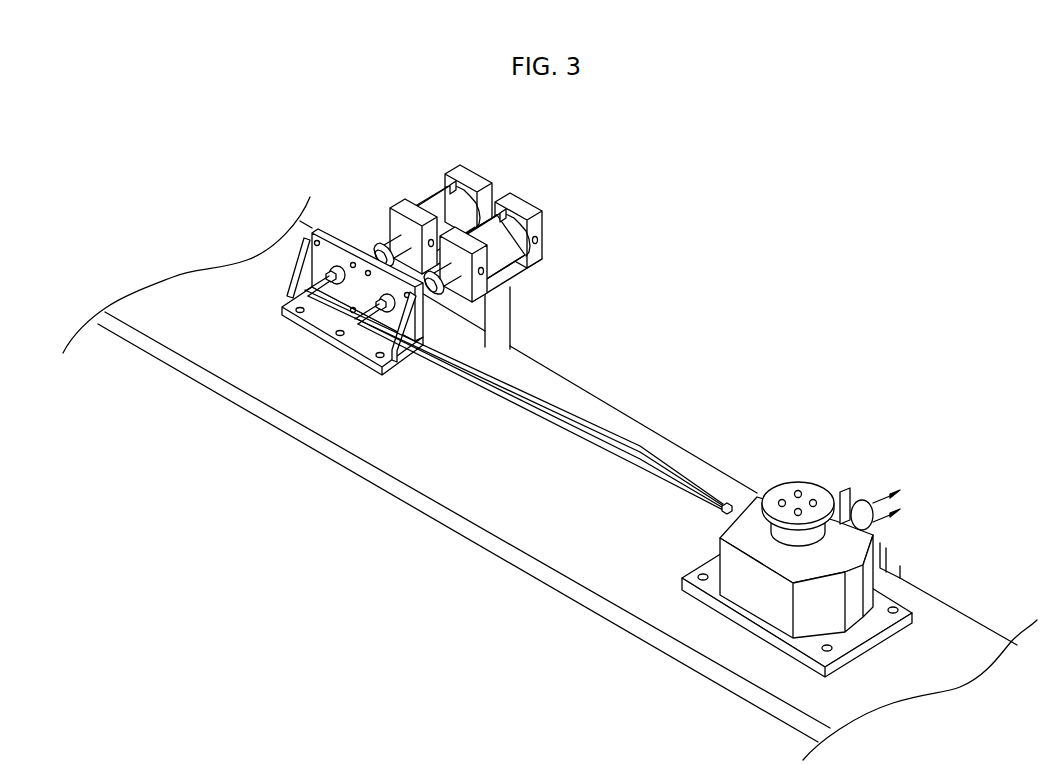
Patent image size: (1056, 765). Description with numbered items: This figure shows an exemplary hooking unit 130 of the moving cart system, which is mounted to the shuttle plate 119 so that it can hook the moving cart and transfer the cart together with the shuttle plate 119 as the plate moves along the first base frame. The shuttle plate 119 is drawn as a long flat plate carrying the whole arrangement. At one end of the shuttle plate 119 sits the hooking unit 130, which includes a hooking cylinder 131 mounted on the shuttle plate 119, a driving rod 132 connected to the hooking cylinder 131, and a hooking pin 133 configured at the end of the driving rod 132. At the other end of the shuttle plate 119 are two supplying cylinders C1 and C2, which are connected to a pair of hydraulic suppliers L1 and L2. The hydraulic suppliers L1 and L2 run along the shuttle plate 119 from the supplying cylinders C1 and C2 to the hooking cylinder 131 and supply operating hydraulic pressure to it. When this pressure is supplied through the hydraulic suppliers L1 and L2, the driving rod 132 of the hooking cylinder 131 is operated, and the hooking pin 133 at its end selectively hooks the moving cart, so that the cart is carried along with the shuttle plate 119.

The shuttle plate 119 is at (432, 488).
The hooking unit 130 is at (819, 558).
The hooking cylinder 131 is at (853, 590).
The driving rod 132 is at (787, 545).
The hooking pin 133 is at (796, 482).
The supplying cylinder C1 is at (522, 207).
The supplying cylinder C2 is at (468, 175).
The hydraulic supplier L1 is at (587, 422).
The hydraulic supplier L2 is at (633, 461).